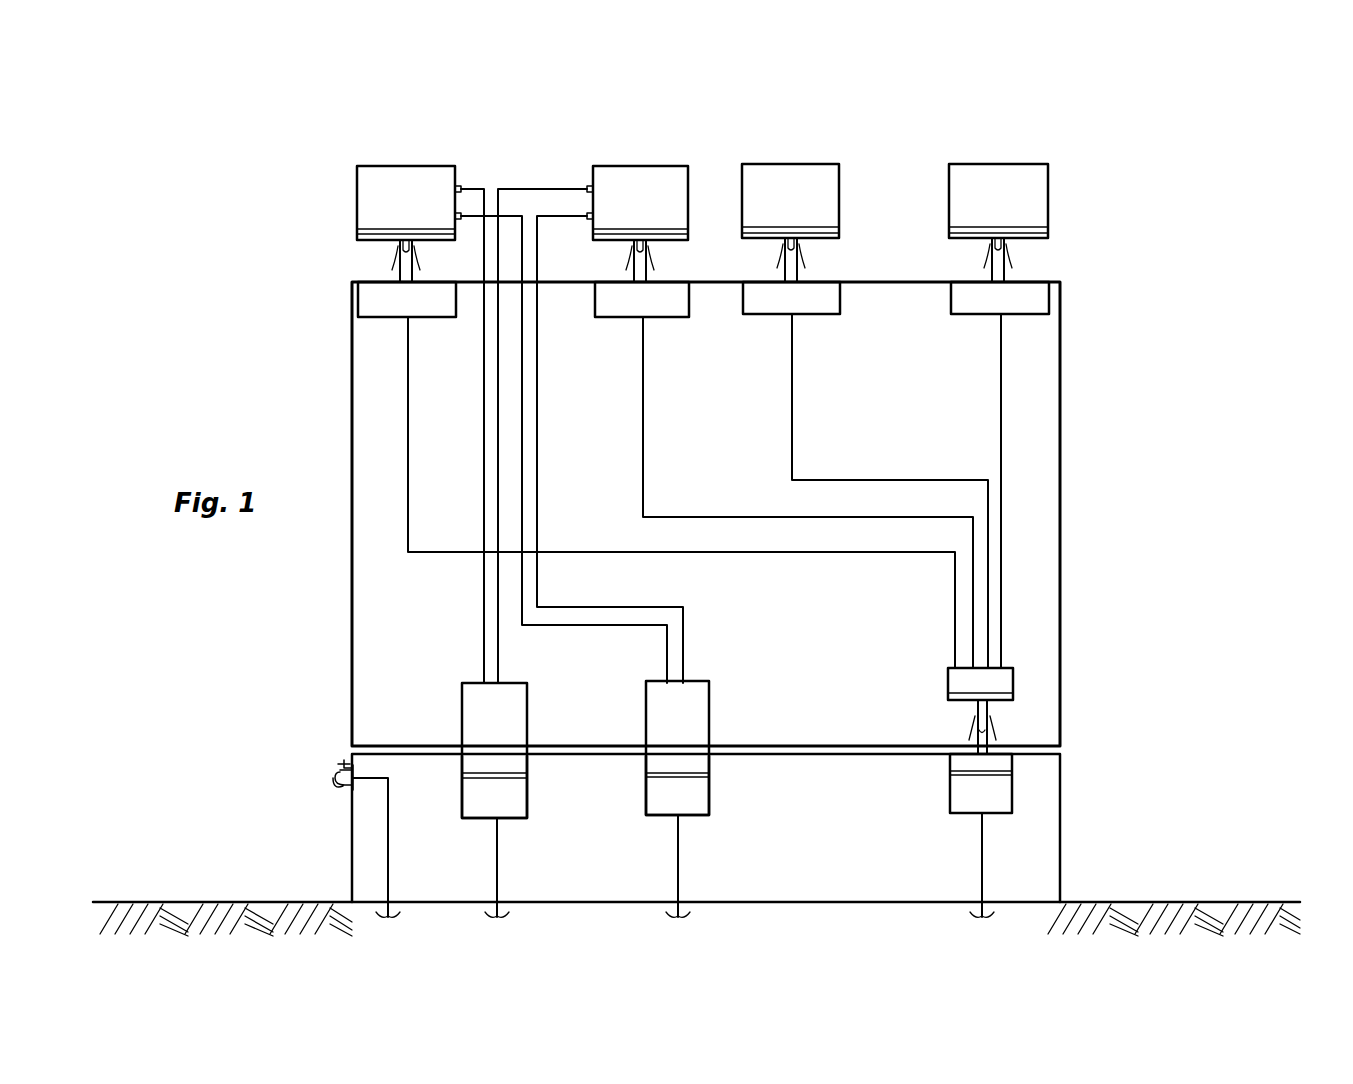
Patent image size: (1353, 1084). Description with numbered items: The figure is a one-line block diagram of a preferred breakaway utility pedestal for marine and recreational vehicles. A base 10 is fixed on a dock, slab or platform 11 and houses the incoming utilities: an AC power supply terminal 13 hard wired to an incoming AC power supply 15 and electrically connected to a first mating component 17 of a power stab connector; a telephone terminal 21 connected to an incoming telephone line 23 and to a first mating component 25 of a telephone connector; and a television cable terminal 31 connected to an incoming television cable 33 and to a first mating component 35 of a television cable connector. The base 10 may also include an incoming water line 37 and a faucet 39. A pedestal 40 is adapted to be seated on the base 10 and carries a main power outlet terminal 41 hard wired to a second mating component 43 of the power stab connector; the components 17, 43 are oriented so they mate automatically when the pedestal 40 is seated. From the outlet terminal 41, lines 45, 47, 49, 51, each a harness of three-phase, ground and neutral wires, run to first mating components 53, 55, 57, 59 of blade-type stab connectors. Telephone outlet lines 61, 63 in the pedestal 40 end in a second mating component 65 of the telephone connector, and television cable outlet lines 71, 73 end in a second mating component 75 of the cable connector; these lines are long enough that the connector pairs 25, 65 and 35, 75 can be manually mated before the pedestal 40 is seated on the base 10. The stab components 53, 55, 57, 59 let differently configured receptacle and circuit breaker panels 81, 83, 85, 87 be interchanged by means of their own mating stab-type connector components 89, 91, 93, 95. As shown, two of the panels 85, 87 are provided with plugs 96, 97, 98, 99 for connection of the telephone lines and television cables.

The base 10 is at (1070, 805).
The dock, slab, platform or the like 11 is at (1170, 900).
The AC power supply terminal 13 is at (948, 803).
The incoming AC power supply 15 is at (985, 862).
The first mating component of stab connector 17 is at (948, 757).
The telephone terminal 21 is at (697, 817).
The incoming telephone line 23 is at (680, 870).
The first mating component of telephone connector 25 is at (710, 765).
The television cable terminal 31 is at (510, 820).
The incoming television cable 33 is at (500, 877).
The first mating component of television cable connector 35 is at (528, 767).
The incoming water line 37 is at (391, 865).
The faucet 39 is at (341, 764).
The pedestal 40 is at (1070, 422).
The main power outlet terminal 41 is at (948, 680).
The second mating component of power stab connector 43 is at (957, 700).
The line 45 is at (998, 420).
The line 47 is at (790, 422).
The line 49 is at (641, 432).
The line 51 is at (409, 445).
The first mating component of blade-type stab connector 53 is at (972, 316).
The first mating component of blade-type stab connector 55 is at (770, 316).
The first mating component of blade-type stab connector 57 is at (627, 318).
The first mating component of blade-type stab connector 59 is at (417, 318).
The telephone outlet line 61 is at (685, 640).
The telephone outlet line 63 is at (666, 662).
The second mating component of telephone connector 65 is at (705, 697).
The television cable outlet line 71 is at (500, 662).
The television cable outlet line 73 is at (483, 657).
The second mating component of television cable connector 75 is at (528, 706).
The receptacle and circuit breaker panel 81 is at (1048, 180).
The receptacle and circuit breaker panel 83 is at (842, 178).
The receptacle and circuit breaker panel 85 is at (689, 193).
The receptacle and circuit breaker panel 87 is at (357, 173).
The mating stab-type connector component 89 is at (1033, 242).
The mating stab-type connector component 91 is at (830, 242).
The mating stab-type connector component 93 is at (670, 242).
The mating stab-type connector component 95 is at (368, 242).
The plug 96 is at (586, 222).
The plug 97 is at (462, 220).
The plug 98 is at (586, 184).
The plug 99 is at (463, 185).